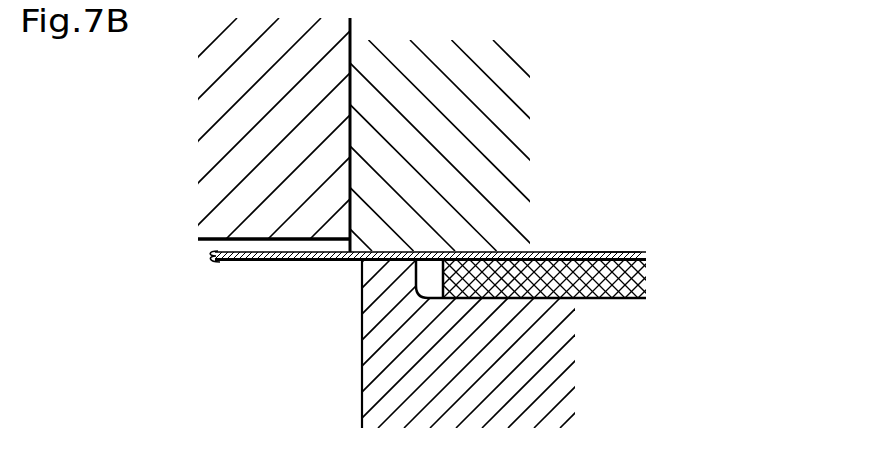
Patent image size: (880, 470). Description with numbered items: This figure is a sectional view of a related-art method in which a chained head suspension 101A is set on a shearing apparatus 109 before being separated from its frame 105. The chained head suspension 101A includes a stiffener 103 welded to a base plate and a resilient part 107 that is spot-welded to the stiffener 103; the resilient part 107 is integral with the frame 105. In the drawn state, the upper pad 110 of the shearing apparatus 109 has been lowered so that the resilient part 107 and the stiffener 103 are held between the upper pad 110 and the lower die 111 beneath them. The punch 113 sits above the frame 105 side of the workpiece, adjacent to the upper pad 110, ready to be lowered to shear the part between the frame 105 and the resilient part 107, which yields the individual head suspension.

The chained head suspension 101A is at (600, 251).
The stiffener 103 is at (640, 275).
The frame 105 is at (227, 265).
The resilient part 107 is at (632, 250).
The shearing apparatus 109 is at (634, 45).
The upper pad 110 is at (502, 113).
The lower die 111 is at (387, 362).
The punch 113 is at (242, 127).